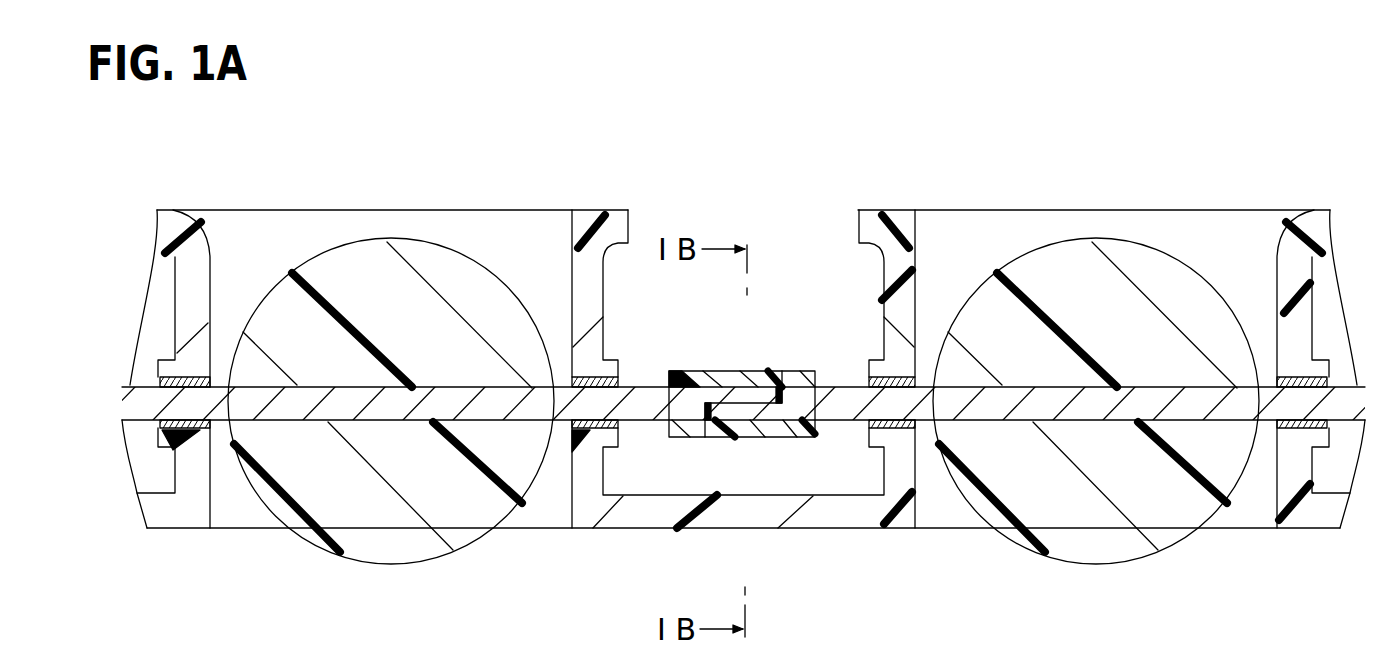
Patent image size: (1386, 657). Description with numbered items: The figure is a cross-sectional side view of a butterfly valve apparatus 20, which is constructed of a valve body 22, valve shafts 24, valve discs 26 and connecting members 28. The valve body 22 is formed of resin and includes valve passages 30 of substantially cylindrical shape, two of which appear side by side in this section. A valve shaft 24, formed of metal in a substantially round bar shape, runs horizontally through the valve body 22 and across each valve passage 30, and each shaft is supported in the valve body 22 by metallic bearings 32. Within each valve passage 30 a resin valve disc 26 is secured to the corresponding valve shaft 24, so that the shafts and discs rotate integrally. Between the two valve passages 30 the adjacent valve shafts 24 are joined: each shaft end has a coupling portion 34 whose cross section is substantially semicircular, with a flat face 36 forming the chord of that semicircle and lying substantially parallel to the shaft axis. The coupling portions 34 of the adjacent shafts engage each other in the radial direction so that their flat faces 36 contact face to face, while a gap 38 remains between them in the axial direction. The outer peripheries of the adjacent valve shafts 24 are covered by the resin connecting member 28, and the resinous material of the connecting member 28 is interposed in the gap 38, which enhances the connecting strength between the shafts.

The butterfly valve apparatus 20 is at (189, 195).
The valve body 22 is at (622, 233).
The valve shaft 24 is at (497, 398).
The valve disc 26 is at (426, 258).
The connecting member 28 is at (797, 432).
The valve passage 30 is at (249, 265).
The bearing 32 is at (200, 433).
The coupling portion 34 is at (733, 403).
The flat face 36 is at (768, 402).
The gap 38 is at (779, 375).